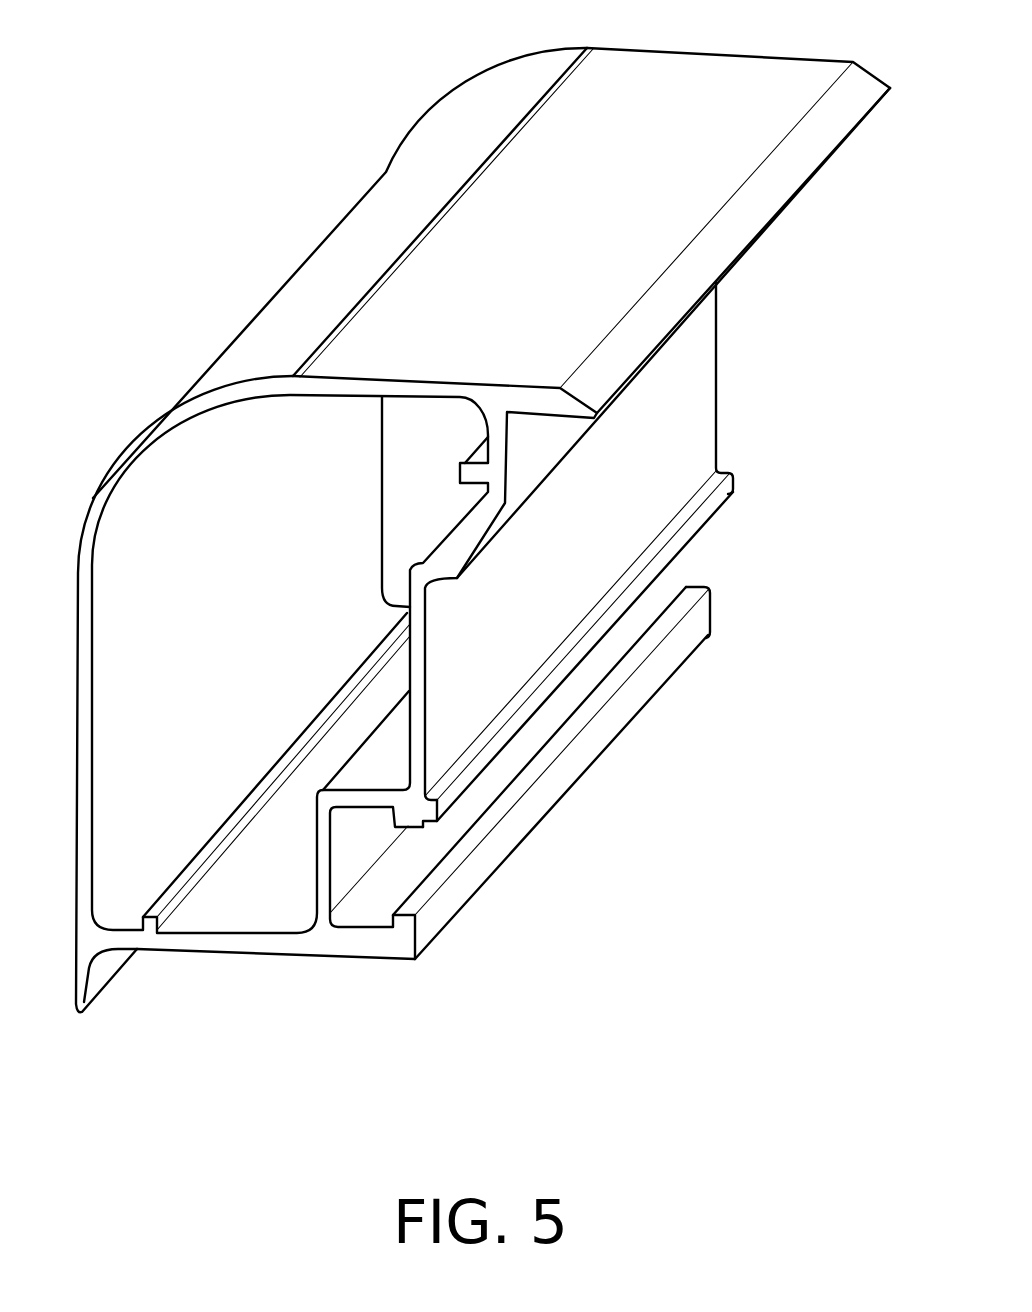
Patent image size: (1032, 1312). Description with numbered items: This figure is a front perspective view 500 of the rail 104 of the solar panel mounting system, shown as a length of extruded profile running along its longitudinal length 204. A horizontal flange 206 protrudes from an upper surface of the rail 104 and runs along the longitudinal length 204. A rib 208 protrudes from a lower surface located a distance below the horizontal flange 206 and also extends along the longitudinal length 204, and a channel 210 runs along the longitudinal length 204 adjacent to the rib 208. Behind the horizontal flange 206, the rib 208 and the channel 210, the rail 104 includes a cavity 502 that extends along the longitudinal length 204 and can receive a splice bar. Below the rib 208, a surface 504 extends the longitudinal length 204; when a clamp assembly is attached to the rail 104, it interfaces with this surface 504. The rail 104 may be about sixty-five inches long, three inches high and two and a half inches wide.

The rail 104 is at (234, 263).
The horizontal flange 206 is at (539, 384).
The longitudinal length 204 is at (352, 613).
The rib 208 is at (567, 653).
The channel 210 is at (414, 843).
The cavity 502 is at (213, 900).
The surface 504 is at (575, 767).
The front perspective view 500 is at (935, 1111).